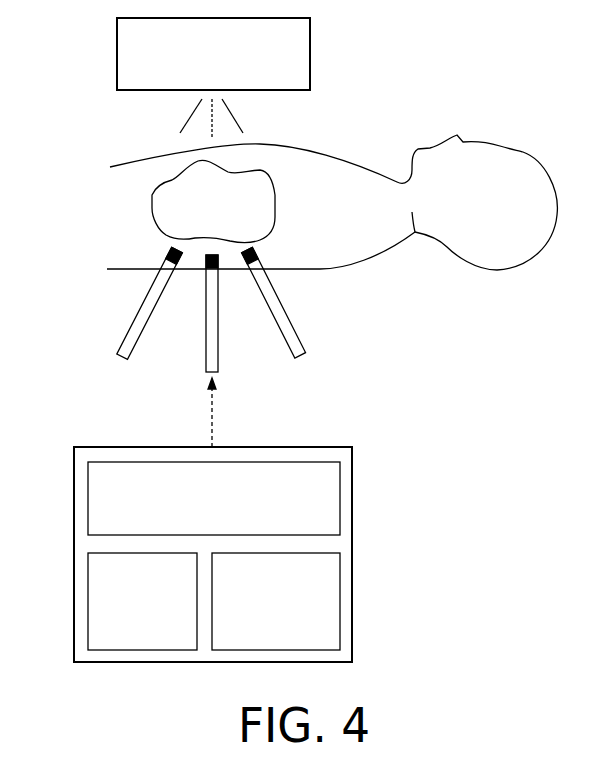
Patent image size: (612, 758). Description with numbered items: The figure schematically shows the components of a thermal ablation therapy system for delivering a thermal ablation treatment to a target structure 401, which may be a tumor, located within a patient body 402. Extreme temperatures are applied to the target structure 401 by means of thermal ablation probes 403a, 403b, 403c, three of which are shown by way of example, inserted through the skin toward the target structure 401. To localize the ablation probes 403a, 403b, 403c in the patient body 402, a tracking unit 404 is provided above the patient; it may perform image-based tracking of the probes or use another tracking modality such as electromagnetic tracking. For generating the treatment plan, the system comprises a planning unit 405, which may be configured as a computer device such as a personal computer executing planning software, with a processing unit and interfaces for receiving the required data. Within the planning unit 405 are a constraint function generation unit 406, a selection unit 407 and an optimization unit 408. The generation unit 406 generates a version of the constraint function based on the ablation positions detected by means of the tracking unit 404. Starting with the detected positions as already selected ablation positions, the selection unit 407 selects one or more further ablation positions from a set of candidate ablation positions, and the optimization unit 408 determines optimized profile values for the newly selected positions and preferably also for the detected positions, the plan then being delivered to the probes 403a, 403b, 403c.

The target structure 401 is at (152, 204).
The patient body 402 is at (522, 150).
The thermal ablation probe 403a is at (140, 318).
The thermal ablation probe 403b is at (206, 347).
The thermal ablation probe 403c is at (283, 313).
The tracking unit 404 is at (193, 80).
The planning unit 405 is at (295, 520).
The constraint function generation unit 406 is at (193, 527).
The selection unit 407 is at (122, 642).
The optimization unit 408 is at (256, 642).